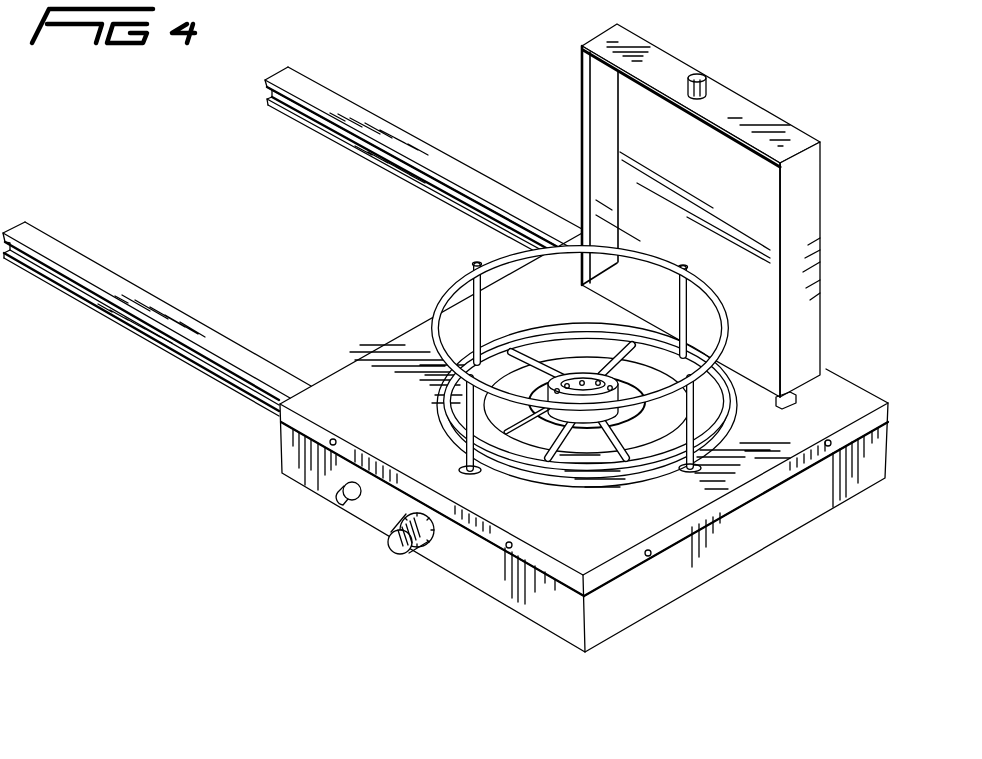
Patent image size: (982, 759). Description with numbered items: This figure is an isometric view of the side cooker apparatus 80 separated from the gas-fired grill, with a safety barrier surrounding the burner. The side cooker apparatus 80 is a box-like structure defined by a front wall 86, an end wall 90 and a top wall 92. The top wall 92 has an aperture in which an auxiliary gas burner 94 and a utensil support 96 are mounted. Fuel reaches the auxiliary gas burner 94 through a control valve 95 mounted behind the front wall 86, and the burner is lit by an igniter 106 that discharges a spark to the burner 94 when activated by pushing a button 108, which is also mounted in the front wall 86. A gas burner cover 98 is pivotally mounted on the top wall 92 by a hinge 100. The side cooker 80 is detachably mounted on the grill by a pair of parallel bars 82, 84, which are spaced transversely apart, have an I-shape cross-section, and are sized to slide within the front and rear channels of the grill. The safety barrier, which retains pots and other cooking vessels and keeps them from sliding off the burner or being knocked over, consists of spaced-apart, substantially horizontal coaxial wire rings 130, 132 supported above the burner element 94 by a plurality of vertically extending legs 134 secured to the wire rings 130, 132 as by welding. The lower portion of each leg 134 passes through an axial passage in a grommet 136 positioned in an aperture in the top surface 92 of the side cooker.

The side cooker apparatus 80 is at (445, 338).
The parallel bar 82 is at (250, 357).
The parallel bar 84 is at (447, 165).
The front wall 86 is at (470, 572).
The end wall 90 is at (743, 543).
The top wall 92 is at (410, 330).
The auxiliary gas burner 94 is at (590, 433).
The control valve 95 is at (398, 554).
The utensil support 96 is at (623, 450).
The gas burner cover 98 is at (582, 118).
The hinge 100 is at (779, 406).
The igniter 106 is at (537, 433).
The button 108 is at (342, 505).
The wire ring 130 is at (460, 280).
The wire ring 132 is at (440, 402).
The leg 134 is at (672, 266).
The grommet 136 is at (463, 464).